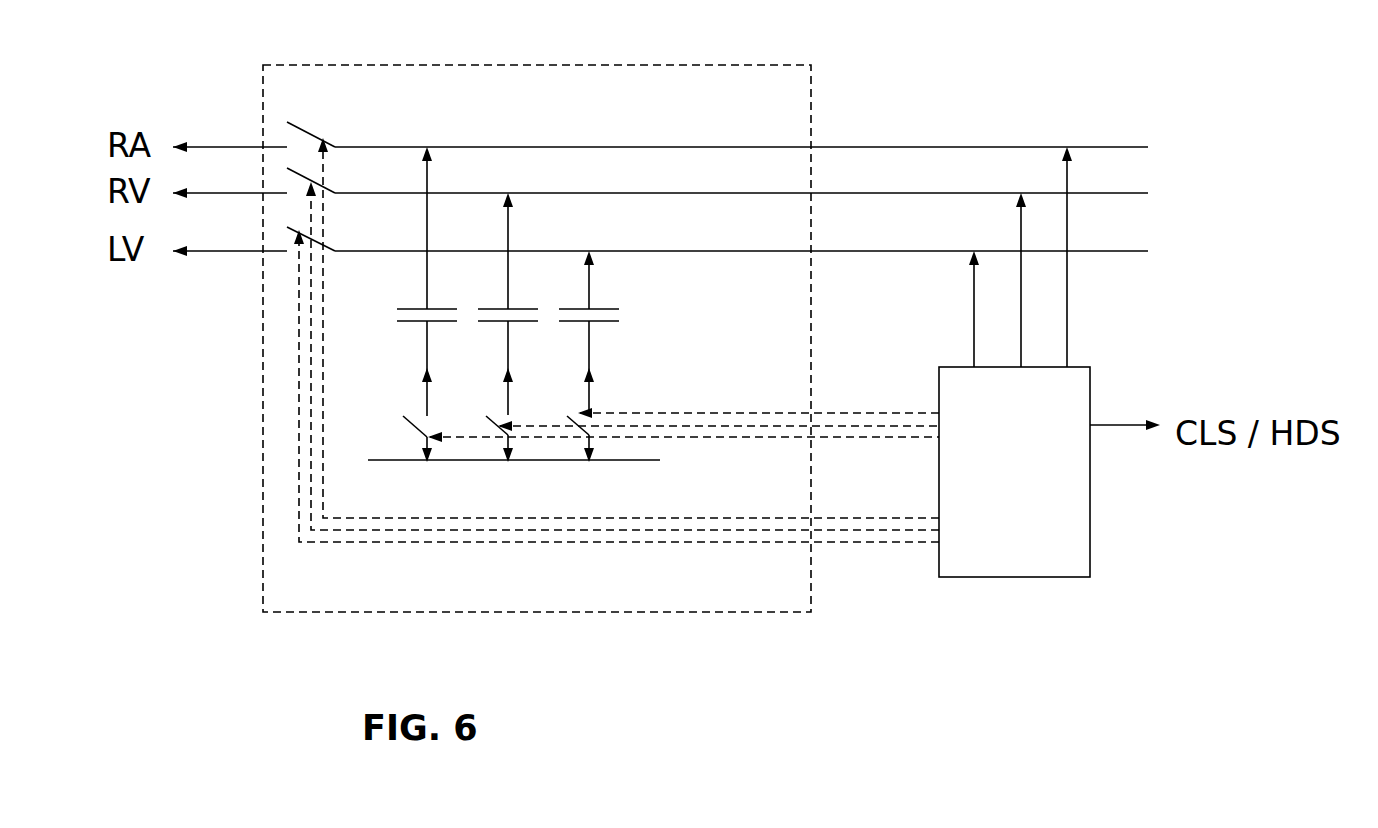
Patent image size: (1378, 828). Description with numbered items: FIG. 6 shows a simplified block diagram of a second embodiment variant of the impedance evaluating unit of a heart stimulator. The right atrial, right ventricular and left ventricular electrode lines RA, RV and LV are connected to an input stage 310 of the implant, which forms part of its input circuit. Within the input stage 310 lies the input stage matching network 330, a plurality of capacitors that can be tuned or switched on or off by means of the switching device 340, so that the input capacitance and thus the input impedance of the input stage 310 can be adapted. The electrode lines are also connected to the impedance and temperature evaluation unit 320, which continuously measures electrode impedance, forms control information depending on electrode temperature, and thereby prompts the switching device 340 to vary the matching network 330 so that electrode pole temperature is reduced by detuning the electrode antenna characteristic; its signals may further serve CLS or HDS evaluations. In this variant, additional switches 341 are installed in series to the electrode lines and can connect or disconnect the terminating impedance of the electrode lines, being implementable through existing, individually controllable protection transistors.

The input stage 310 is at (537, 309).
The impedance and temperature evaluation unit 320 is at (1049, 362).
The input stage matching network 330 is at (556, 317).
The switching device 340 is at (470, 408).
The electrode switches 341 is at (326, 170).